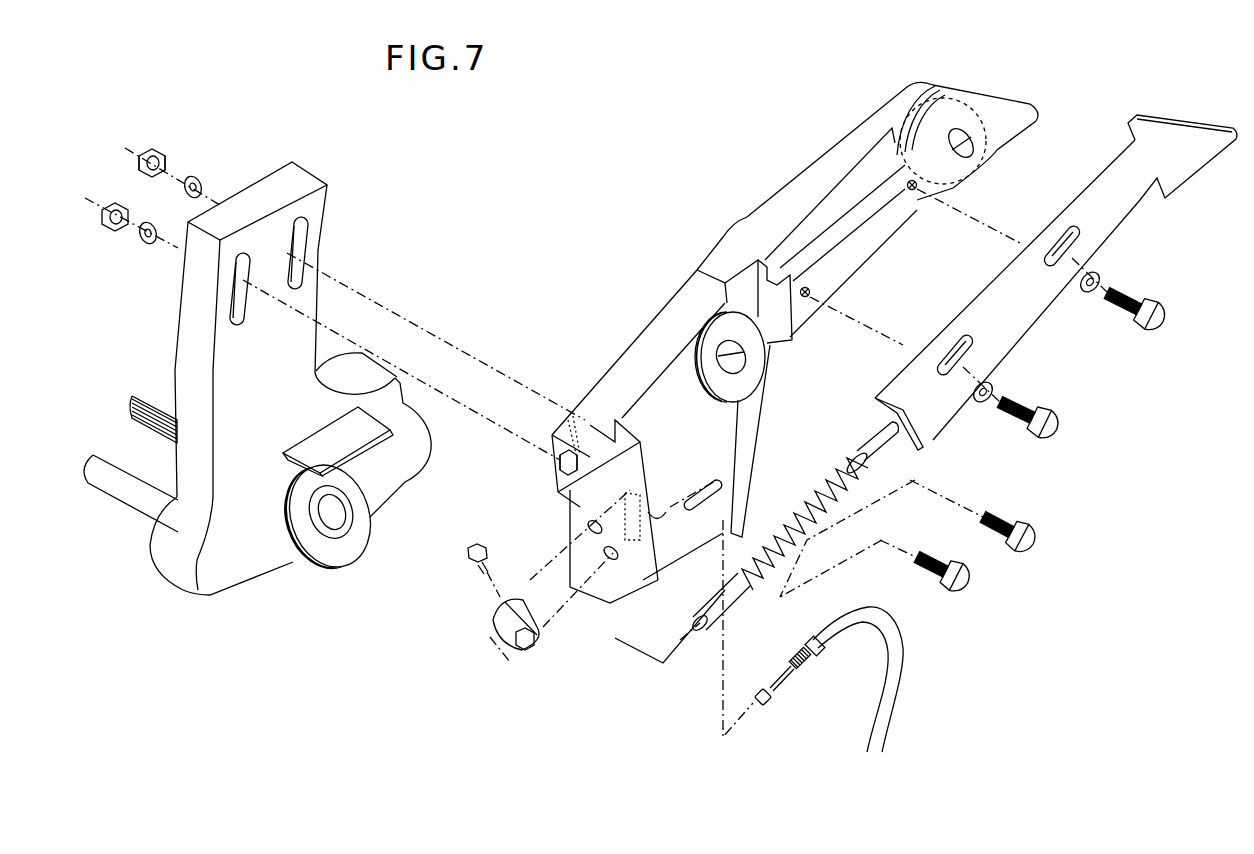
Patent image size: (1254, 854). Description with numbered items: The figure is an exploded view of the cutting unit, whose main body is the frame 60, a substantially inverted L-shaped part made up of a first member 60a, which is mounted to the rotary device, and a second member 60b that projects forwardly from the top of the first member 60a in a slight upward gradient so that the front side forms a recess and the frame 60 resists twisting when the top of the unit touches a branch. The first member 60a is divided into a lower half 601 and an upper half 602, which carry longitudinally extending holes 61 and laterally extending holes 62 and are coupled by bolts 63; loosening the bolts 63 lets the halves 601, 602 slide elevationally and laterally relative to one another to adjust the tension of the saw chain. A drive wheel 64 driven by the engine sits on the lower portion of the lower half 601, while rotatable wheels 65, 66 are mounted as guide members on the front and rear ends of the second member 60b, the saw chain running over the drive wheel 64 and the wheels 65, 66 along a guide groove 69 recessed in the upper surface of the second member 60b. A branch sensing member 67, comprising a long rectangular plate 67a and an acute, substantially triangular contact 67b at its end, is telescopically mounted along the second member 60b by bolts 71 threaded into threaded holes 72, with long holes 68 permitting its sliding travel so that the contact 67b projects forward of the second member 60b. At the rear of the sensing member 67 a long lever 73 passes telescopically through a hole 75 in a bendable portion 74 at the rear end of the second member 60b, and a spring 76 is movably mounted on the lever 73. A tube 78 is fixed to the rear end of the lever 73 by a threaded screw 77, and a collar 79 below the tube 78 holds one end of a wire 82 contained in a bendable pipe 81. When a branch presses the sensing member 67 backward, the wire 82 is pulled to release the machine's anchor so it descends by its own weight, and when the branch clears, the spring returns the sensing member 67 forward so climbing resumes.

The frame 60 is at (575, 203).
The first member 60a is at (495, 261).
The second member 60b is at (653, 332).
The lower half 601 is at (327, 232).
The upper half 602 is at (567, 547).
The longitudinally extending holes 61 is at (243, 263).
The laterally extending holes 62 is at (658, 515).
The bolts 63 is at (967, 590).
The drive wheel 64 is at (350, 530).
The rotatable wheel 65 is at (975, 119).
The rotatable wheel 66 is at (757, 357).
The branch sensing member 67 is at (1197, 78).
The long rectangular plate 67a is at (1097, 177).
The acute contact 67b is at (1202, 120).
The long holes 68 is at (1065, 242).
The guide groove 69 is at (837, 203).
The bolts 71 is at (1124, 313).
The threaded holes 72 is at (912, 190).
The long lever 73 is at (723, 618).
The bendable portion 74 is at (560, 464).
The hole 75 is at (588, 524).
The spring 76 is at (813, 490).
The threaded screw 77 is at (472, 540).
The tube 78 is at (507, 610).
The collar 79 is at (535, 647).
The bendable pipe 81 is at (890, 710).
The wire 82 is at (781, 683).